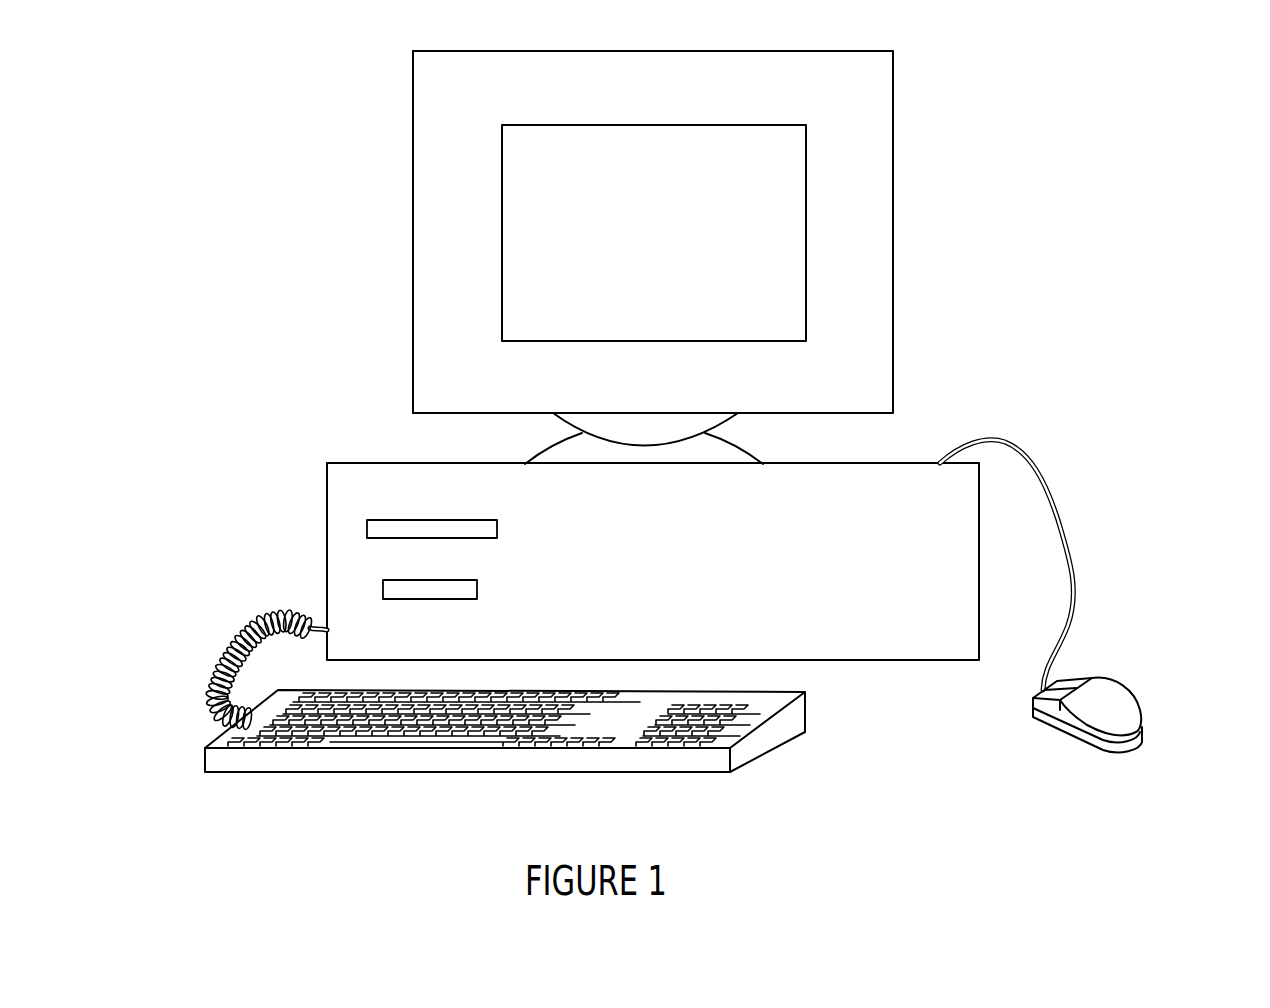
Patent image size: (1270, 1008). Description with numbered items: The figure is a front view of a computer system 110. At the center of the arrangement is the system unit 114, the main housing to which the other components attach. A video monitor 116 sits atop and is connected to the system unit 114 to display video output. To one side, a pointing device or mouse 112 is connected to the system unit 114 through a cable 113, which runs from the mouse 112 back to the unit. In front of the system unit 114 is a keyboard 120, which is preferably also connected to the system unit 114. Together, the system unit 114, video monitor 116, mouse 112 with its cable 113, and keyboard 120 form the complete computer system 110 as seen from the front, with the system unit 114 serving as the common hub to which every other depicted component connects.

The computer system 110 is at (217, 380).
The mouse 112 is at (1133, 693).
The cable 113 is at (1052, 483).
The system unit 114 is at (327, 553).
The video monitor 116 is at (413, 280).
The keyboard 120 is at (205, 755).